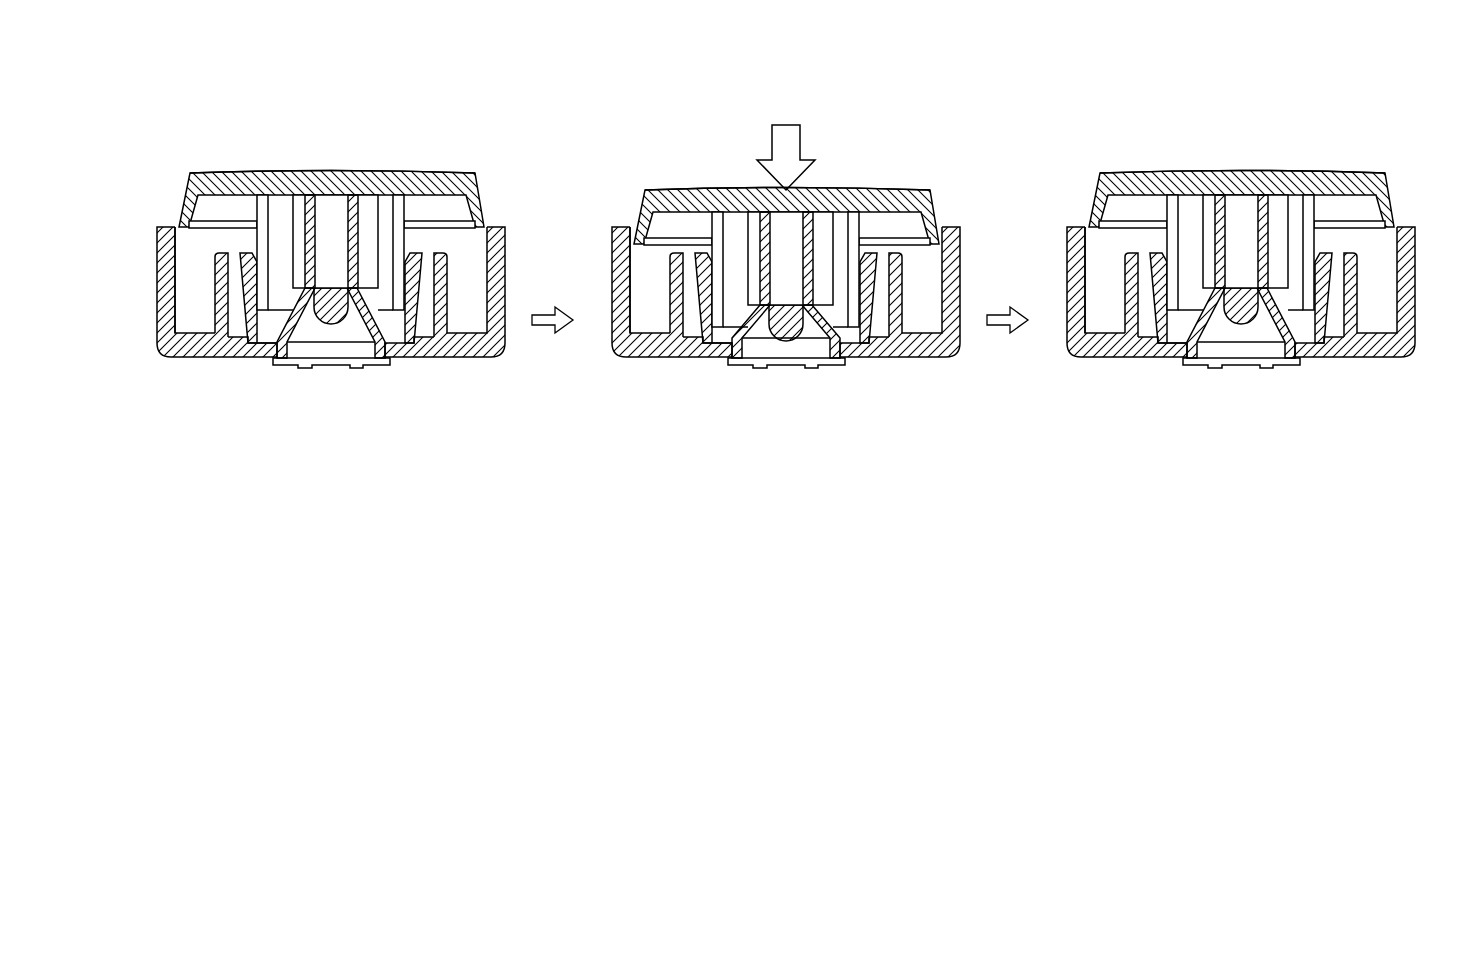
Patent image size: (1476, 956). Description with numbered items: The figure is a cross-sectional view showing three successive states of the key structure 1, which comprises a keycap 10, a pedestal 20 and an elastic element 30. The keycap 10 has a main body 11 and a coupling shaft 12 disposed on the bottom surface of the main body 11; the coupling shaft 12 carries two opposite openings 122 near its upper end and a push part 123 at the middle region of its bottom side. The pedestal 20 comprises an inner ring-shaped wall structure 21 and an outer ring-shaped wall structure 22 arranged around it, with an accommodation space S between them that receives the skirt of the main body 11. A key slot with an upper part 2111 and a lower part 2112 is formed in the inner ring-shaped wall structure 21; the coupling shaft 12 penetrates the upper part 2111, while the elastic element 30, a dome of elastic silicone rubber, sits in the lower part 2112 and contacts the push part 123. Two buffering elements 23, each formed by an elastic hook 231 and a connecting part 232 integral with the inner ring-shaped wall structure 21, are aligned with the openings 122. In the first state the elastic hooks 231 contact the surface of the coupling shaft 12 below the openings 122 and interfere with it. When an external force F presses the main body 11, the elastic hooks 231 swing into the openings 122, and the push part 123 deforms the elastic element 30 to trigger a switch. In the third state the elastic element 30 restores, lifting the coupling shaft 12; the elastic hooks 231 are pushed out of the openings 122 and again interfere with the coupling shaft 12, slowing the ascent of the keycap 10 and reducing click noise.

The key structure 1 is at (106, 92).
The keycap 10 is at (786, 167).
The main body 11 is at (327, 164).
The coupling shaft 12 is at (816, 229).
The opening 122 is at (415, 245).
The push part 123 is at (310, 217).
The pedestal 20 is at (492, 350).
The inner ring-shaped wall structure 21 is at (643, 304).
The upper part of key slot 2111 is at (228, 252).
The lower part of key slot 2112 is at (264, 349).
The outer ring-shaped wall structure 22 is at (173, 267).
The buffering element 23 is at (882, 360).
The elastic hook 231 is at (410, 338).
The connecting part 232 is at (430, 342).
The elastic element 30 is at (328, 328).
The accommodation space S is at (196, 285).
The external force F is at (786, 146).